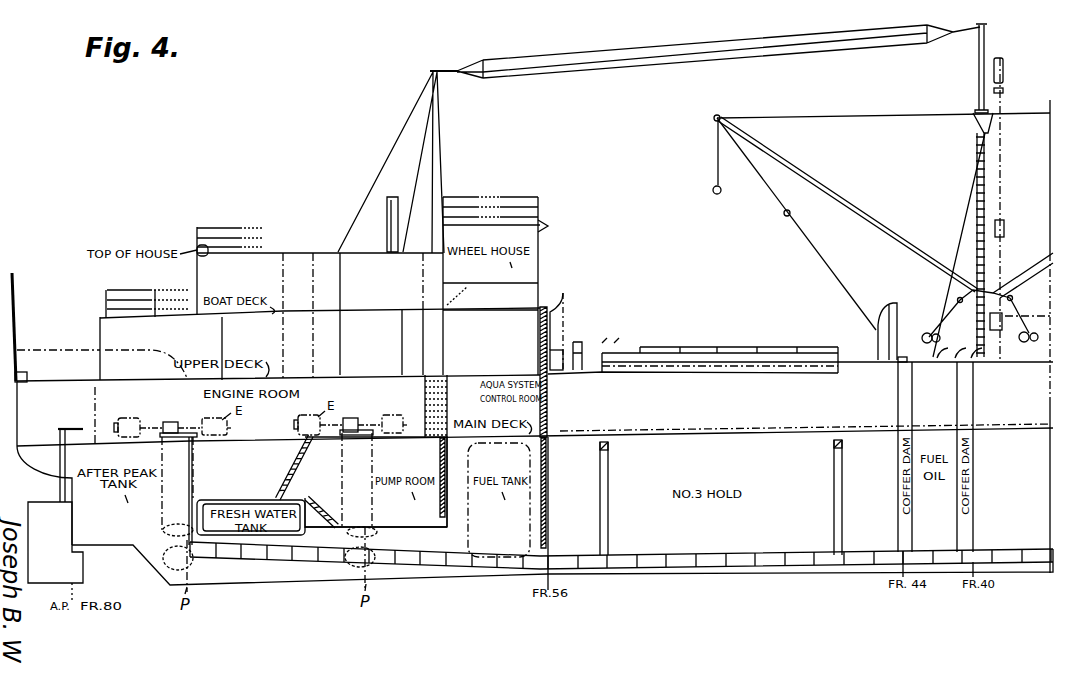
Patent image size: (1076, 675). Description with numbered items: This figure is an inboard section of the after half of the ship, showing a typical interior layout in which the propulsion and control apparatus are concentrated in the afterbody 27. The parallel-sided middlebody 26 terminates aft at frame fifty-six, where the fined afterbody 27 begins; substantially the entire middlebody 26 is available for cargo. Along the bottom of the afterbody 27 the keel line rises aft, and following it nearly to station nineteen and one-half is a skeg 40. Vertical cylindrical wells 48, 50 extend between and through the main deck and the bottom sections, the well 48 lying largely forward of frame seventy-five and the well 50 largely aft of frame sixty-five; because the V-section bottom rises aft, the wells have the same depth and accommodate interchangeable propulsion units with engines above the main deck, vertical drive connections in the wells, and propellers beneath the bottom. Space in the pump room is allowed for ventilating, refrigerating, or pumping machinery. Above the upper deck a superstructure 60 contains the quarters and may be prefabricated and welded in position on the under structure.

The middlebody 26 is at (863, 575).
The afterbody 27 is at (437, 570).
The skeg 40 is at (262, 573).
The vertical cylindrical well 48 is at (189, 472).
The vertical cylindrical well 50 is at (375, 473).
The superstructure 60 is at (128, 283).